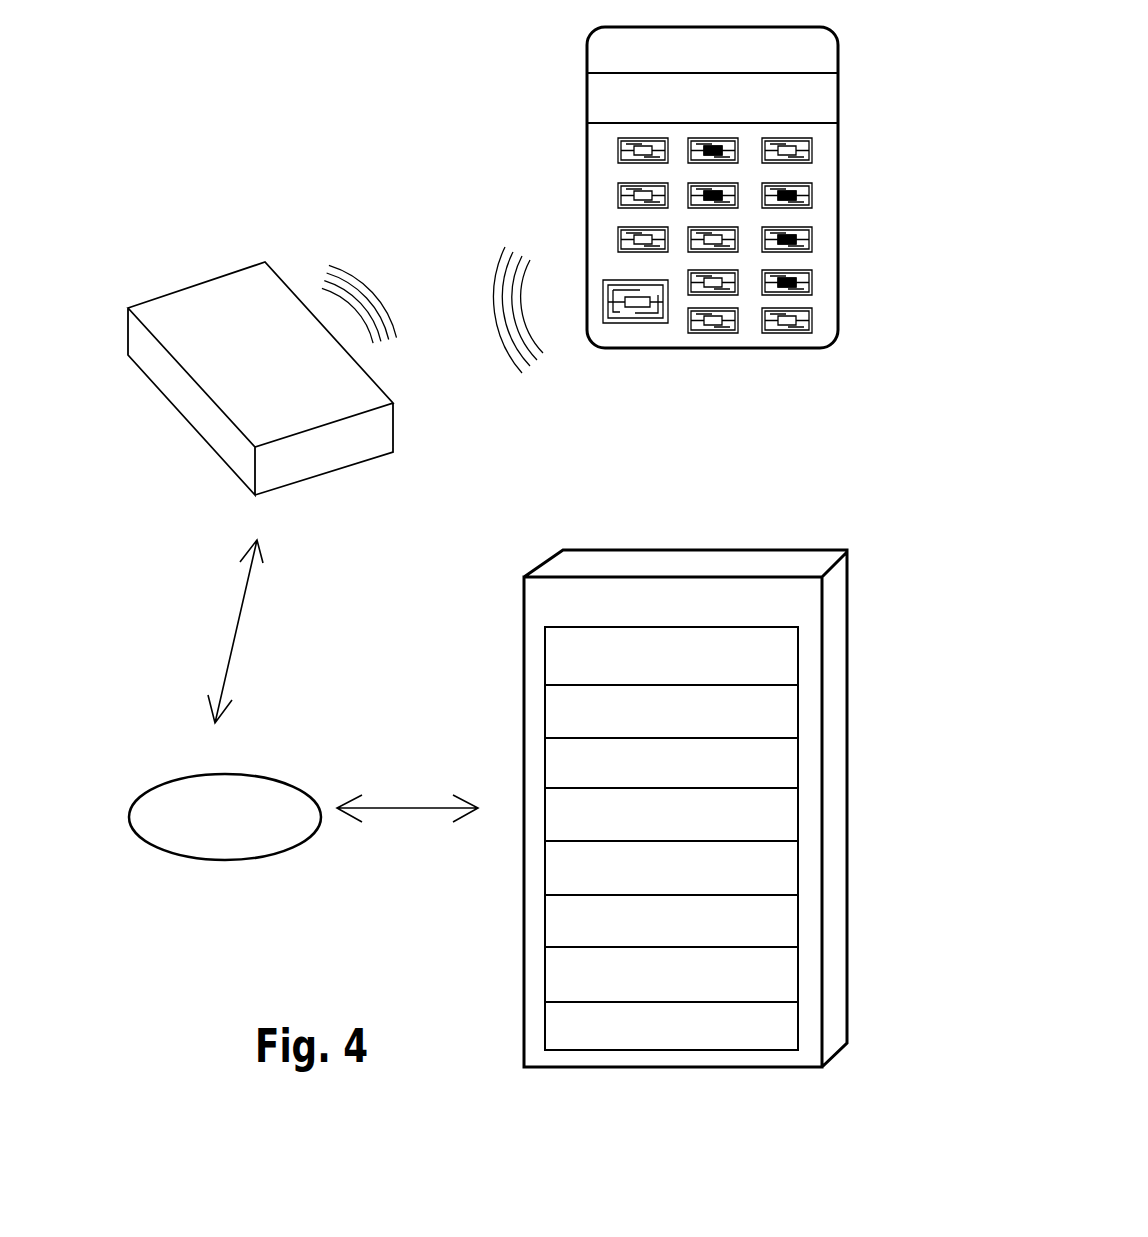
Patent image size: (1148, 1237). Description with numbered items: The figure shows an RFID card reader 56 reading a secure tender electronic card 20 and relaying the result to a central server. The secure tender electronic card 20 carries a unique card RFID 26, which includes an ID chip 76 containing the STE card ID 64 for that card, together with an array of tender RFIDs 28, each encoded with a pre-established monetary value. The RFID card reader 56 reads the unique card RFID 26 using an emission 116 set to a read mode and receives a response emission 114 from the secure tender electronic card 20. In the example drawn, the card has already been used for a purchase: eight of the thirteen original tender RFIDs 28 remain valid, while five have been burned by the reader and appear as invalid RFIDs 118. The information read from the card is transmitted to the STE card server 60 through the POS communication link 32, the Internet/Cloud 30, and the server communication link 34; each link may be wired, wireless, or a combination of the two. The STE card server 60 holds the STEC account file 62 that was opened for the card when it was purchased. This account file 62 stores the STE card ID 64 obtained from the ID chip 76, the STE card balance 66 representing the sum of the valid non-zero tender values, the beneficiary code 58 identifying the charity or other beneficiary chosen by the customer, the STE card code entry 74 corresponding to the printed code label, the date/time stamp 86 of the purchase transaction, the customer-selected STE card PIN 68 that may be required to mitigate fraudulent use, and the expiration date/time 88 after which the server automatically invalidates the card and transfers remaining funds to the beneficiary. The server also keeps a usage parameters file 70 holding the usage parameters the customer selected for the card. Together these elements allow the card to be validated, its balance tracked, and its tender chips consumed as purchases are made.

The secure tender electronic card 20 is at (588, 32).
The invalid RFIDs 118 is at (812, 228).
The tender RFIDs 28 is at (795, 333).
The ID chip 76 is at (630, 310).
The unique card RFID 26 is at (655, 330).
The response emission 114 is at (500, 352).
The emission 116 is at (367, 267).
The RFID card reader 56 is at (335, 473).
The POS communication link 32 is at (232, 633).
The server communication link 34 is at (410, 817).
The Internet/Cloud 30 is at (160, 850).
The STE card server 60 is at (751, 524).
The STEC account file 62 is at (805, 623).
The STE card ID 64 is at (805, 652).
The STE card balance 66 is at (805, 705).
The beneficiary code 58 is at (790, 767).
The STE card code entry 74 is at (788, 818).
The date/time stamp 86 is at (783, 872).
The STE card PIN 68 is at (792, 913).
The expiration date/time 88 is at (790, 963).
The usage parameters file 70 is at (790, 1008).